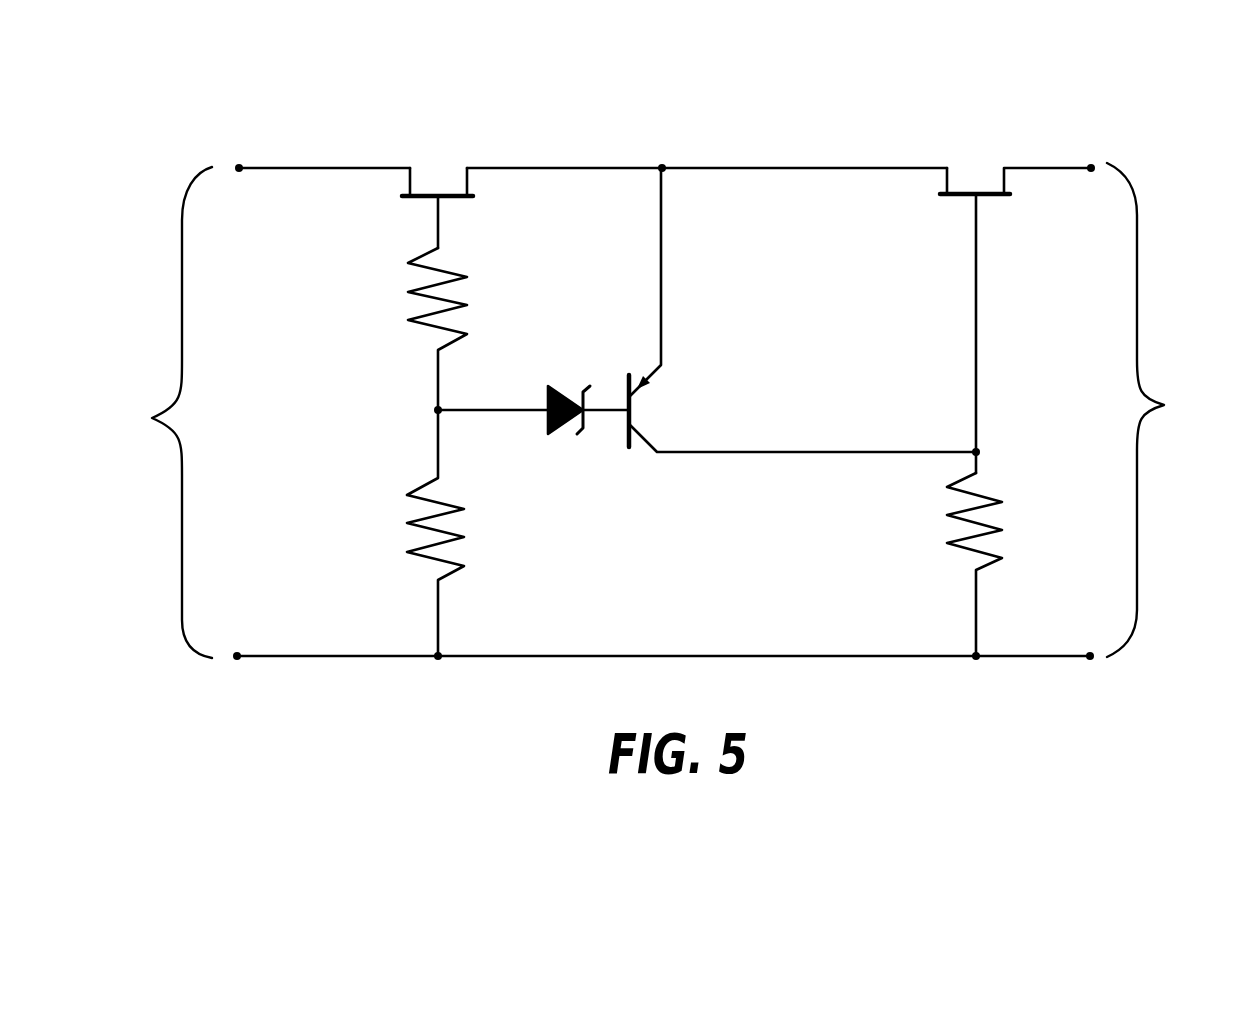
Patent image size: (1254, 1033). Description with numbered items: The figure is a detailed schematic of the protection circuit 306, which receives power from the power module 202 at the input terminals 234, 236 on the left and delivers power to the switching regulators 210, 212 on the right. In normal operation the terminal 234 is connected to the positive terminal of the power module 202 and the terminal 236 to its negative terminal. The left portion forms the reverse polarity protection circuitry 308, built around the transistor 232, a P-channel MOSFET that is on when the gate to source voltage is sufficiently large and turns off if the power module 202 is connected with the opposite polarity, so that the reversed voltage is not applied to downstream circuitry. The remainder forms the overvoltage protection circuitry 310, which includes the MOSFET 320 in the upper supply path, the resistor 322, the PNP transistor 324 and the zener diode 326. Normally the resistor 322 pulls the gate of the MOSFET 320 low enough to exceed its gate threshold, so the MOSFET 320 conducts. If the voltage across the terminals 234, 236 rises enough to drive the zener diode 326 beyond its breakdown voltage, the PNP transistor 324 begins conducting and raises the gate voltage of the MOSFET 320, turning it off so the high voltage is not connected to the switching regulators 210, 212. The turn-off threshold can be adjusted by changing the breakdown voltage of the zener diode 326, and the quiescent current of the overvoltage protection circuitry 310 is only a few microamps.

The protection circuit 306 is at (784, 89).
The reverse polarity protection circuitry 308 is at (508, 224).
The overvoltage protection circuitry 310 is at (707, 357).
The transistor 232 is at (440, 173).
The terminal 234 is at (239, 166).
The terminal 236 is at (237, 652).
The MOSFET 320 is at (972, 170).
The resistor 322 is at (990, 495).
The PNP transistor 324 is at (625, 422).
The zener diode 326 is at (547, 427).
The power module 202 is at (147, 412).
The switching regulator 210 is at (1178, 410).
The switching regulator 212 is at (1210, 415).